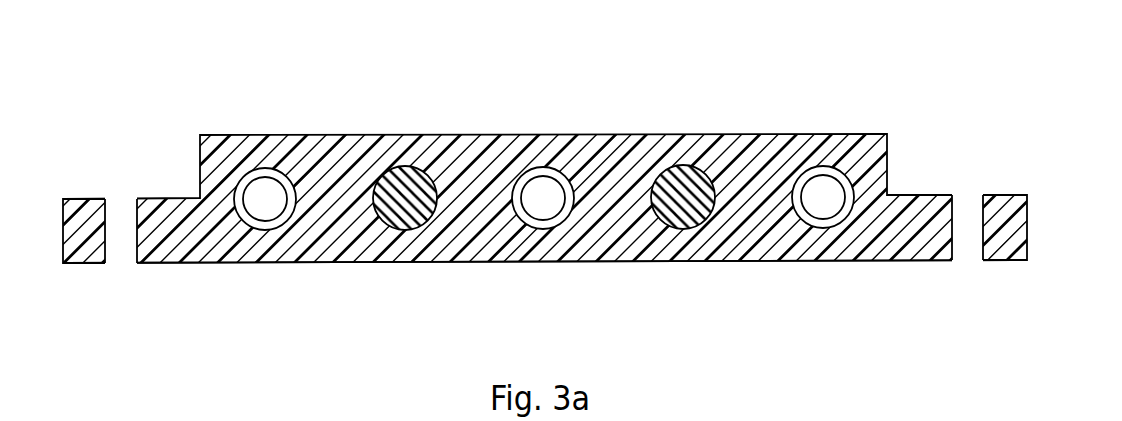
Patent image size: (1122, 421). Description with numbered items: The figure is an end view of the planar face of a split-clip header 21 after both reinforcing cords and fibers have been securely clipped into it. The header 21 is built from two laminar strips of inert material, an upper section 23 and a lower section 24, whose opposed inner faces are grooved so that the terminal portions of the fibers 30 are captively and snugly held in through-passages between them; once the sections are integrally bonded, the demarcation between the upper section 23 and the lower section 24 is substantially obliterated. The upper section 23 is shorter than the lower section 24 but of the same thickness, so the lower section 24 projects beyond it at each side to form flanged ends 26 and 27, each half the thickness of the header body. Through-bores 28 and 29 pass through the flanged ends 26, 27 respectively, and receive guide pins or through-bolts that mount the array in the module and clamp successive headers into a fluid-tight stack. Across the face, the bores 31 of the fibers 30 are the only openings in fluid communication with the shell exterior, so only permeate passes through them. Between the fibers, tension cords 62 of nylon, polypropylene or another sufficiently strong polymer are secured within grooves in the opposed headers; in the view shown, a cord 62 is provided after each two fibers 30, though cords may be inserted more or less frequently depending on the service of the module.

The split-clip header 21 is at (561, 204).
The upper section 23 is at (561, 200).
The lower section 24 is at (672, 262).
The flanged end 26 is at (1027, 226).
The flanged end 27 is at (63, 262).
The through-bore 28 is at (980, 246).
The through-bore 29 is at (131, 258).
The fiber 30 is at (280, 168).
The bore 31 is at (535, 205).
The cord 62 is at (433, 179).